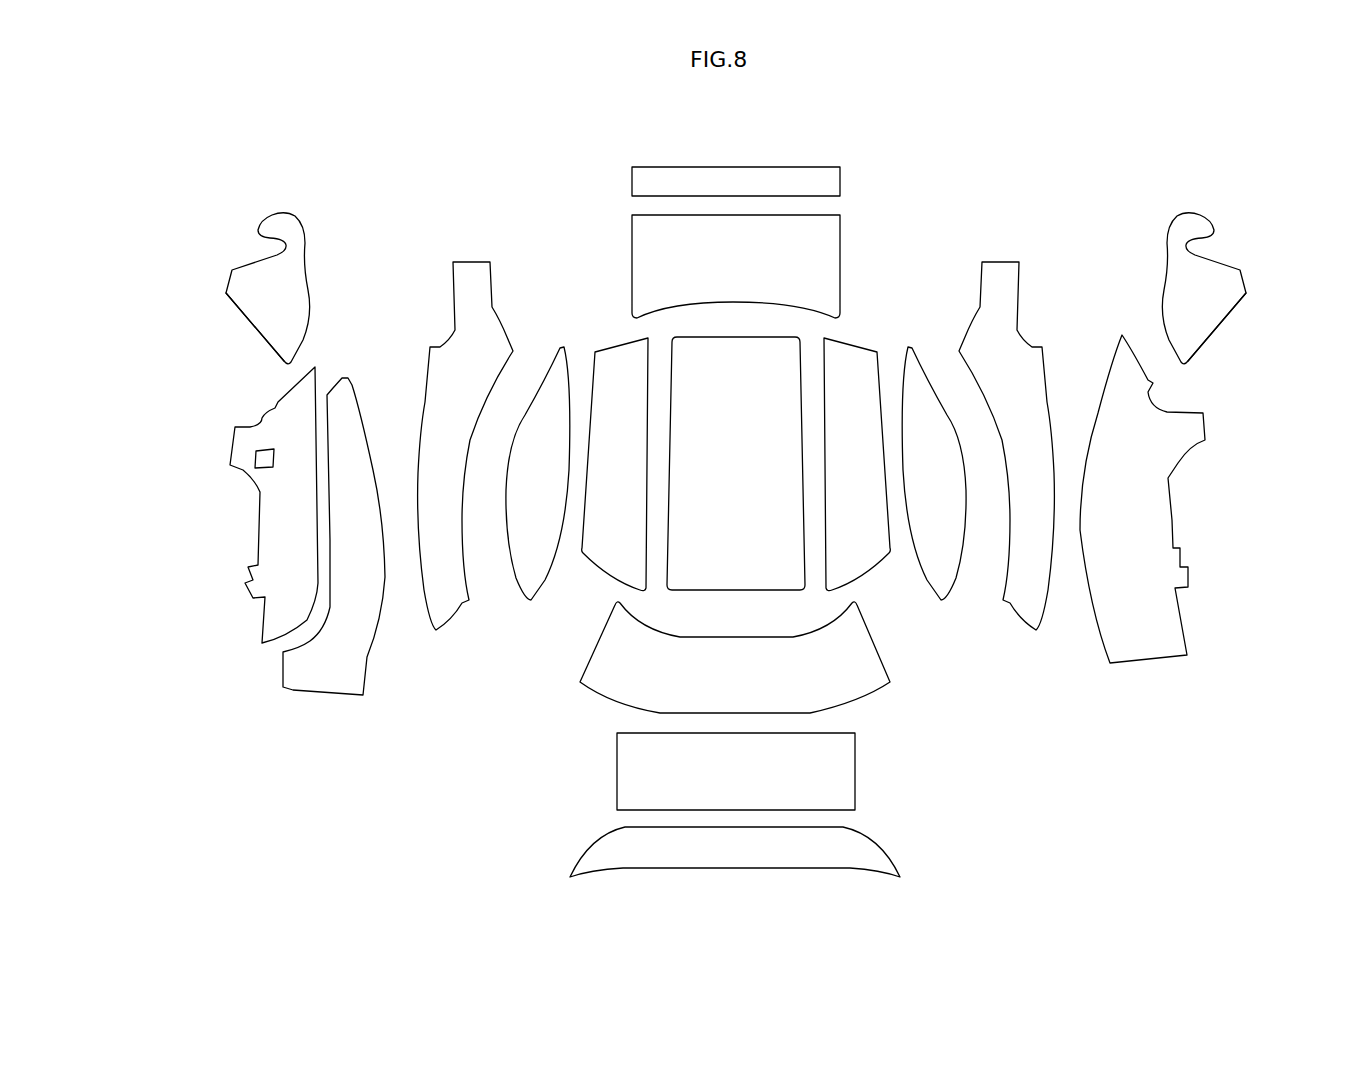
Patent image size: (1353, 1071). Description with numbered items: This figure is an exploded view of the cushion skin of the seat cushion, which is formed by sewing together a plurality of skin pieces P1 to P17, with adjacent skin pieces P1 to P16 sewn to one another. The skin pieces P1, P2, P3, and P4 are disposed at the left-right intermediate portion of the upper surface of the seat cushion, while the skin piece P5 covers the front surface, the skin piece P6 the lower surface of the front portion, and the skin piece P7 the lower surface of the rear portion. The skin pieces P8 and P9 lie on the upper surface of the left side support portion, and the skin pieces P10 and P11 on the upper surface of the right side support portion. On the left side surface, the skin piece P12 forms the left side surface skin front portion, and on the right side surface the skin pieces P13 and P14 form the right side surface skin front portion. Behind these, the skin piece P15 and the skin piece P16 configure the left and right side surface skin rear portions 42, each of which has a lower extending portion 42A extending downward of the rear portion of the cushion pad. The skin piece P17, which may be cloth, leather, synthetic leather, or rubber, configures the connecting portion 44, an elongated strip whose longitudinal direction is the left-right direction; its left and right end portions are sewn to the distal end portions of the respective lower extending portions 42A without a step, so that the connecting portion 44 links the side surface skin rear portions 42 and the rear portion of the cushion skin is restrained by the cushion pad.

The skin piece P1 is at (722, 590).
The skin piece P2 is at (876, 578).
The skin piece P3 is at (597, 578).
The skin piece P4 is at (877, 695).
The skin piece P5 is at (855, 770).
The skin piece P6 is at (740, 870).
The skin piece P7 is at (840, 256).
The skin piece P8 is at (910, 345).
The skin piece P9 is at (1000, 262).
The skin piece P10 is at (560, 345).
The skin piece P11 is at (470, 258).
The skin piece P12 is at (1150, 663).
The skin piece P13 is at (320, 697).
The skin piece P14 is at (258, 530).
The skin piece P15 is at (1165, 278).
The skin piece P16 is at (307, 280).
The skin piece P17 is at (738, 167).
The side surface skin rear portion 42 is at (736, 288).
The lower extending portion 42A is at (252, 323).
The connecting portion 44 is at (736, 139).